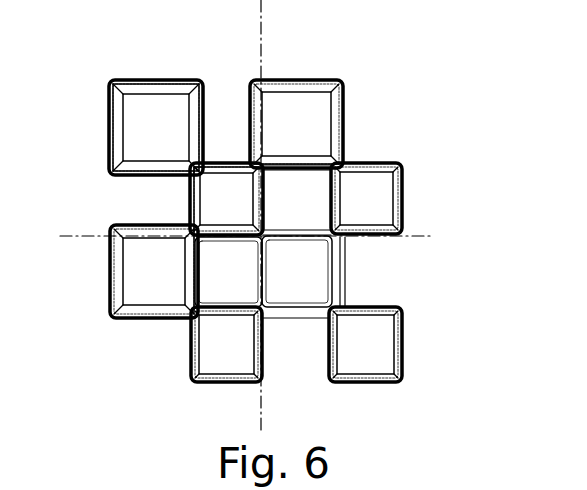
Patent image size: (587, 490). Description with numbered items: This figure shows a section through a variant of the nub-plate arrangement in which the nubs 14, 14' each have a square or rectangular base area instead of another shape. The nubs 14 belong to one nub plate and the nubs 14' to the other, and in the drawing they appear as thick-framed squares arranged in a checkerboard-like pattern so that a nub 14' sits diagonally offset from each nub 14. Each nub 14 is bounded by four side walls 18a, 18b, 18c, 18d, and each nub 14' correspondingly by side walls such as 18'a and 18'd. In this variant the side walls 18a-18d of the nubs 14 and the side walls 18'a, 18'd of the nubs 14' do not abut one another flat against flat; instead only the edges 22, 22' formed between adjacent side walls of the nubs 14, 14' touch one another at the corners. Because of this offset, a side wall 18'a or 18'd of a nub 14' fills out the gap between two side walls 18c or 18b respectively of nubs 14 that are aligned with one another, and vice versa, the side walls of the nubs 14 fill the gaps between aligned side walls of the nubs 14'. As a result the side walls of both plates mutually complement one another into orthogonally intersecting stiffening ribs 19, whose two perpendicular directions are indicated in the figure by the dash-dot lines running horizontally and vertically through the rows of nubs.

The nub 14 is at (149, 92).
The nub 14' is at (161, 218).
The side wall 18a is at (172, 86).
The side wall 18b is at (200, 120).
The side wall 18c is at (155, 173).
The side wall 18d is at (115, 107).
The side wall 18'a is at (226, 105).
The side wall 18'd is at (118, 240).
The edge 22 is at (217, 123).
The edge 22' is at (192, 139).
The stiffening rib 19 is at (426, 232).